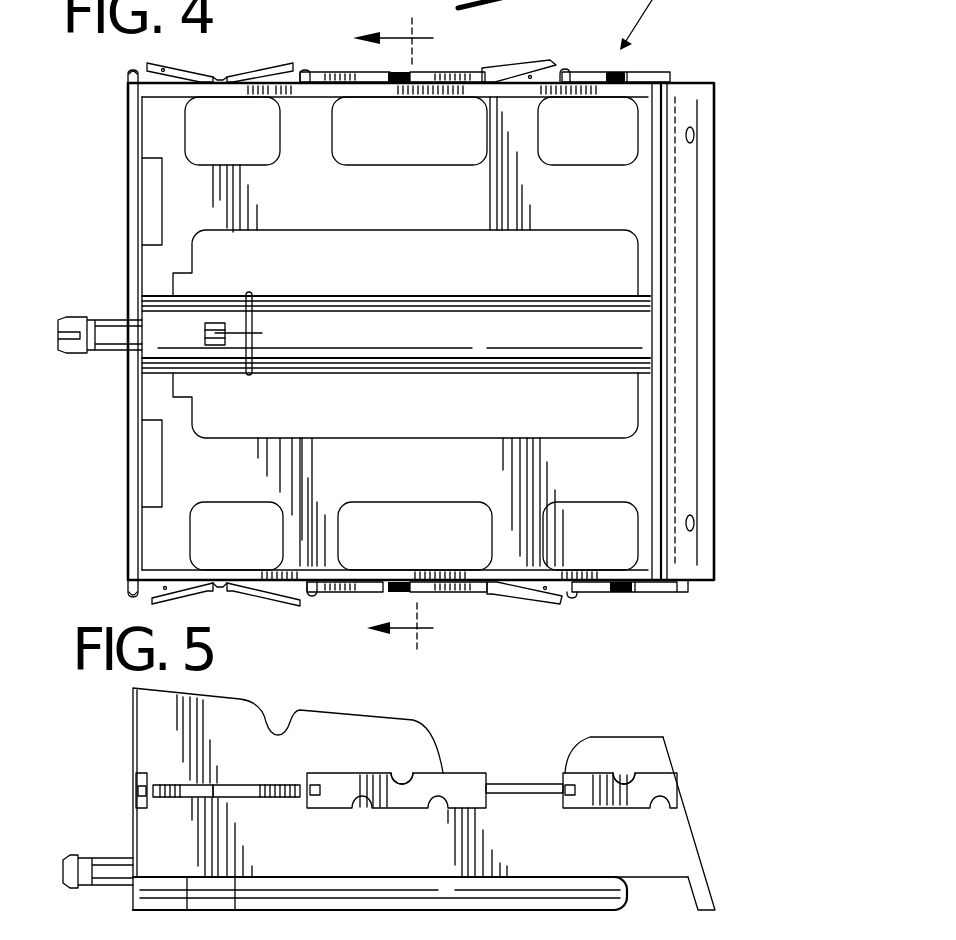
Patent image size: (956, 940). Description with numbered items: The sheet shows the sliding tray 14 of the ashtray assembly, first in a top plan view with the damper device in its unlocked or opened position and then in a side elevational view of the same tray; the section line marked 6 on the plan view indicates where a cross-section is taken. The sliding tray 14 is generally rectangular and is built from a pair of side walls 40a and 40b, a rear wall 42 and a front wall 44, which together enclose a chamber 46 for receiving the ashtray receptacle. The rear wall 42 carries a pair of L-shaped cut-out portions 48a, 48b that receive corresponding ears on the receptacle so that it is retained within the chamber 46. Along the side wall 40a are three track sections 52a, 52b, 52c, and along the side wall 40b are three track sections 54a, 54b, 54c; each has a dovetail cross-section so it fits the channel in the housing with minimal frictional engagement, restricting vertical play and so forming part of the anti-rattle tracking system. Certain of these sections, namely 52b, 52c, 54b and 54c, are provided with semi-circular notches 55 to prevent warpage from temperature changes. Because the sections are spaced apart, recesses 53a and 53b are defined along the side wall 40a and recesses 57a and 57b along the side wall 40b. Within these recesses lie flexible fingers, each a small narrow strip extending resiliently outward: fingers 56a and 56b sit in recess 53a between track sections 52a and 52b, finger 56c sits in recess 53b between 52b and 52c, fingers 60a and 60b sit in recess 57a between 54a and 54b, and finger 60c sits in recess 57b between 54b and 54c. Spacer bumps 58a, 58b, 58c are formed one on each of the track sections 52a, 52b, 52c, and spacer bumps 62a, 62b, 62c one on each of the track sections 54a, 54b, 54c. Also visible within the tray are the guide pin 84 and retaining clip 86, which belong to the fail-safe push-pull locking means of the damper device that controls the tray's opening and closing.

In FIG. 4, the section line 6- 6 is at (393, 334).
In FIG. 4, the sliding tray 14 is at (648, 25).
In FIG. 4, the side wall 40a is at (510, 578).
In FIG. 5, the side wall 40a is at (290, 853).
In FIG. 4, the side wall 40b is at (302, 95).
In FIG. 4, the rear wall 42 is at (128, 122).
In FIG. 5, the rear wall 42 is at (133, 715).
In FIG. 4, the front wall 44 is at (700, 143).
In FIG. 5, the front wall 44 is at (688, 816).
In FIG. 4, the chamber 46 is at (381, 208).
In FIG. 4, the L-shaped cut-out portion 48a is at (148, 470).
In FIG. 4, the L-shaped cut-out portion 48b is at (155, 194).
In FIG. 4, the track section 52a is at (130, 583).
In FIG. 5, the track section 52a is at (136, 781).
In FIG. 4, the track section 52b is at (360, 596).
In FIG. 5, the track section 52b is at (333, 810).
In FIG. 4, the track section 52c is at (647, 597).
In FIG. 5, the track section 52c is at (583, 810).
In FIG. 4, the recess 53a is at (165, 587).
In FIG. 4, the recess 53b is at (545, 587).
In FIG. 4, the track section 54a is at (128, 82).
In FIG. 4, the track section 54b is at (390, 71).
In FIG. 4, the track section 54c is at (638, 70).
In FIG. 5, the semi-circular cut-out portion or notch 55 is at (404, 783).
In FIG. 4, the flexible finger 56a is at (172, 601).
In FIG. 5, the flexible finger 56a is at (170, 787).
In FIG. 4, the flexible finger 56b is at (262, 603).
In FIG. 5, the flexible finger 56b is at (246, 786).
In FIG. 4, the flexible finger 56c is at (515, 601).
In FIG. 5, the flexible finger 56c is at (520, 786).
In FIG. 4, the recess 57a is at (163, 78).
In FIG. 4, the recess 57b is at (530, 78).
In FIG. 4, the spacer bump 58a is at (135, 598).
In FIG. 5, the spacer bump 58a is at (135, 795).
In FIG. 4, the spacer bump 58b is at (314, 600).
In FIG. 5, the spacer bump 58b is at (312, 790).
In FIG. 4, the spacer bump 58c is at (573, 598).
In FIG. 5, the spacer bump 58c is at (560, 790).
In FIG. 4, the flexible finger 60a is at (168, 66).
In FIG. 4, the flexible finger 60b is at (263, 65).
In FIG. 4, the flexible finger 60c is at (520, 70).
In FIG. 4, the spacer bump 62a is at (132, 70).
In FIG. 4, the spacer bump 62b is at (304, 70).
In FIG. 4, the spacer bump 62c is at (566, 70).
In FIG. 4, the guide pin 84 is at (213, 326).
In FIG. 4, the retaining clip 86 is at (249, 378).